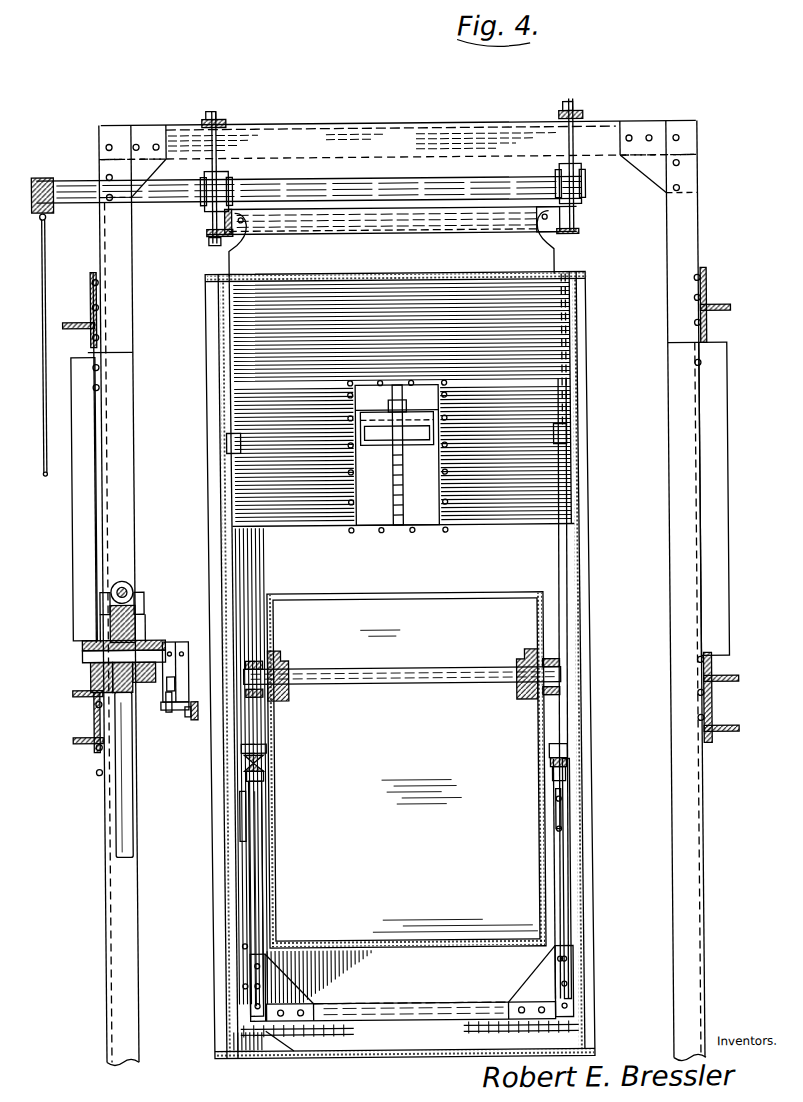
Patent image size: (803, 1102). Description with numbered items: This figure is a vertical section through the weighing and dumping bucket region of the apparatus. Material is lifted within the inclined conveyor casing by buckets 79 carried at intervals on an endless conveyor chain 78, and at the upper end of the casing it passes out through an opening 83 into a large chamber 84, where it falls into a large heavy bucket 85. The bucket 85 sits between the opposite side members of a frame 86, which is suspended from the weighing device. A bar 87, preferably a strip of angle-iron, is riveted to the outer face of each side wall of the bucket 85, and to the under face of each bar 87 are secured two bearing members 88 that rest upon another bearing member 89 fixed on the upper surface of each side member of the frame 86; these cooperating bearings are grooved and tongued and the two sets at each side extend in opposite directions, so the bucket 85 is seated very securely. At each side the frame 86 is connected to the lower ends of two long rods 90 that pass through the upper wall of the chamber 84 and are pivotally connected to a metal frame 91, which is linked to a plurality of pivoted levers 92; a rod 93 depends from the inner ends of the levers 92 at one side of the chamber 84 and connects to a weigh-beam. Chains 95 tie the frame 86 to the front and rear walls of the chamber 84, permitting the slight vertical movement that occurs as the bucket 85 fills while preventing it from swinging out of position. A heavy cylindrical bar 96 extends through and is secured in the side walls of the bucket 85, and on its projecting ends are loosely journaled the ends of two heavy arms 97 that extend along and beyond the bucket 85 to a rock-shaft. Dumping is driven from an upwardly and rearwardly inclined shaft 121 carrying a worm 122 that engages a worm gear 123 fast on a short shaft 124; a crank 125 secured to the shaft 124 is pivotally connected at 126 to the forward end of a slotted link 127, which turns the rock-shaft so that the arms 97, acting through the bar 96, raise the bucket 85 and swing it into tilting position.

The endless conveyor chain 78 is at (394, 487).
The buckets 79 is at (385, 446).
The opening 83 is at (380, 527).
The chamber 84 is at (578, 332).
The bucket 85 is at (411, 588).
The frame 86 is at (240, 917).
The bar 87 is at (266, 748).
The bearing members 88 is at (264, 762).
The bearing member 89 is at (263, 776).
The rods 90 is at (240, 571).
The metal frame 91 is at (692, 124).
The pivoted levers 92 is at (54, 212).
The rod 93 is at (36, 361).
The chains 95 is at (291, 1040).
The cylindrical bar 96 is at (406, 668).
The arms 97 is at (250, 662).
The shaft 121 is at (131, 857).
The worm 122 is at (131, 592).
The worm gear 123 is at (136, 626).
The short shaft 124 is at (85, 652).
The crank 125 is at (192, 662).
The pivot 126 is at (194, 722).
The link 127 is at (190, 712).